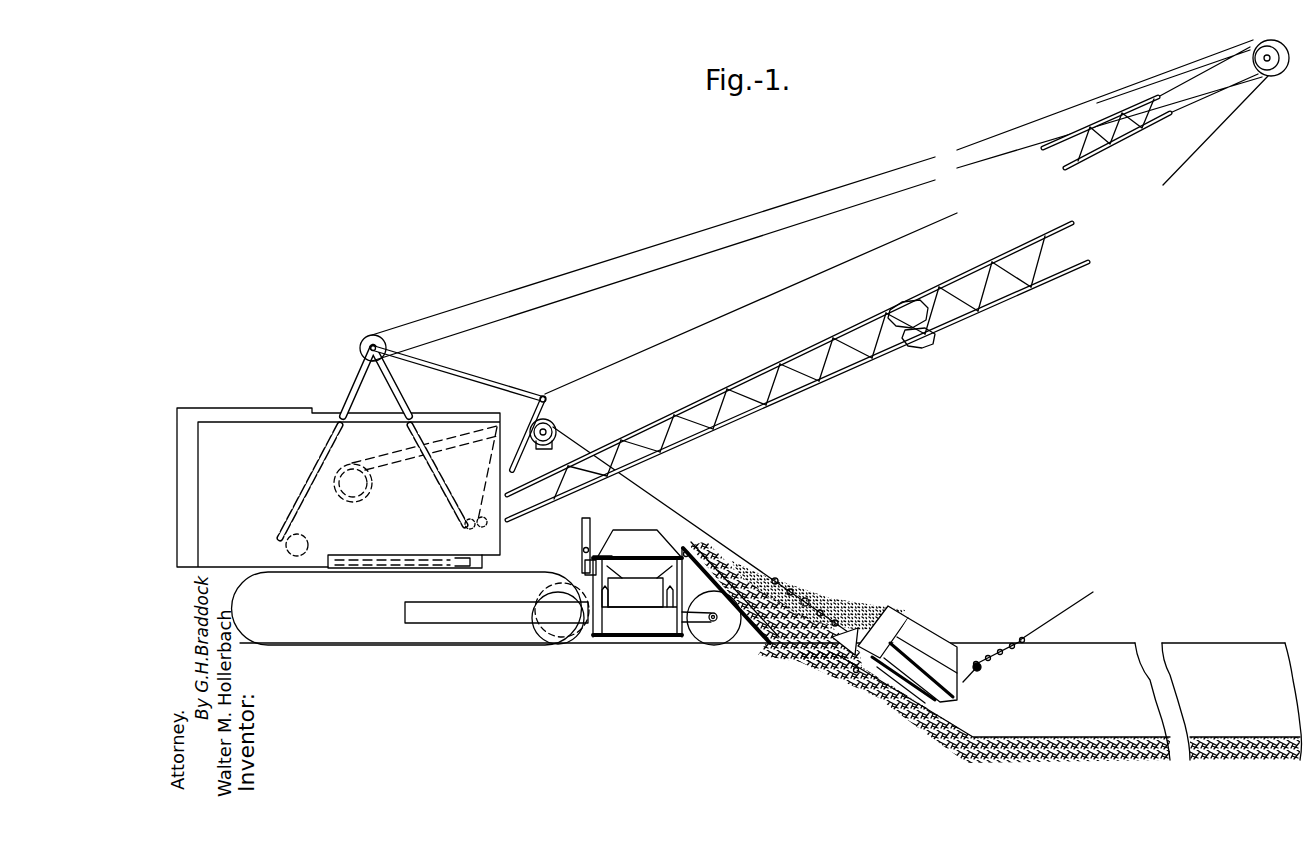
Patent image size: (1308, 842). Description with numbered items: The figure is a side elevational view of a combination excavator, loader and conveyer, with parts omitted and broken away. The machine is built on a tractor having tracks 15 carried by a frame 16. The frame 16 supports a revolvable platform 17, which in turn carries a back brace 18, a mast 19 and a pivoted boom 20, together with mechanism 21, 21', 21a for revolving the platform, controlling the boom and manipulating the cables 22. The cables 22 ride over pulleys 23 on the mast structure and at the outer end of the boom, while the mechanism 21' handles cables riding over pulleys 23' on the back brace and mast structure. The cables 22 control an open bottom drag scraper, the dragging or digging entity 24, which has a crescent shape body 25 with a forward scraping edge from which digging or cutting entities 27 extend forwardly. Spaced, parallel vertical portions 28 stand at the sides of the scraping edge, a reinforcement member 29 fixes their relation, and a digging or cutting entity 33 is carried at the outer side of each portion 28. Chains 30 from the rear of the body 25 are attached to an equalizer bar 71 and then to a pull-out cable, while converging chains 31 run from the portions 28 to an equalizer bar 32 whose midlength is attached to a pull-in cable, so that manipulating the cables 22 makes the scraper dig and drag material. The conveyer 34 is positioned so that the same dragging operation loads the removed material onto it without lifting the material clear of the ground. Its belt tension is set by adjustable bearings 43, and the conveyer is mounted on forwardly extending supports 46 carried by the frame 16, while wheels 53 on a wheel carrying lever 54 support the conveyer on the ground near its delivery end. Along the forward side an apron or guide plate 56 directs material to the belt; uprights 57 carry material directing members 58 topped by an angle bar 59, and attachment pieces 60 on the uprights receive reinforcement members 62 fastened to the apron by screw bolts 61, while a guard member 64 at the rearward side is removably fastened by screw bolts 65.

The tracks 15 is at (516, 574).
The frame 16 is at (393, 641).
The revolvable platform 17 is at (500, 550).
The back brace 18 is at (348, 389).
The mast 19 is at (488, 364).
The pivoted boom 20 is at (880, 354).
The mechanism 21 is at (388, 495).
The mechanism 21' is at (311, 532).
The mechanism 21a is at (372, 486).
The cables 22 is at (1204, 152).
The pulleys 23 is at (900, 255).
The pulleys 23' is at (375, 331).
The dragging or digging entity 24 is at (920, 650).
The crescent shape body 25 is at (958, 697).
The digging or cutting entities 27 is at (908, 713).
The vertical portions 28 is at (843, 652).
The reinforcement member 29 is at (893, 608).
The chains 30 is at (1005, 650).
The converging chains 31 is at (810, 602).
The equalizer bar 32 is at (790, 590).
The digging or cutting entity 33 is at (855, 673).
The conveyer 34 is at (640, 610).
The adjustable bearings 43 is at (604, 639).
The supports 46 is at (493, 605).
The wheels 53 is at (580, 643).
The wheel carrying lever 54 is at (705, 622).
The apron or guide plate 56 is at (745, 622).
The uprights 57 is at (556, 596).
The material directing members 58 is at (640, 556).
The angle bar 59 is at (598, 556).
The attachment pieces 60 is at (700, 550).
The screw bolts 61 is at (688, 552).
The reinforcement members 62 is at (762, 642).
The guard member 64 is at (590, 530).
The screw bolts 65 is at (584, 552).
The equalizer bar 71 is at (975, 662).